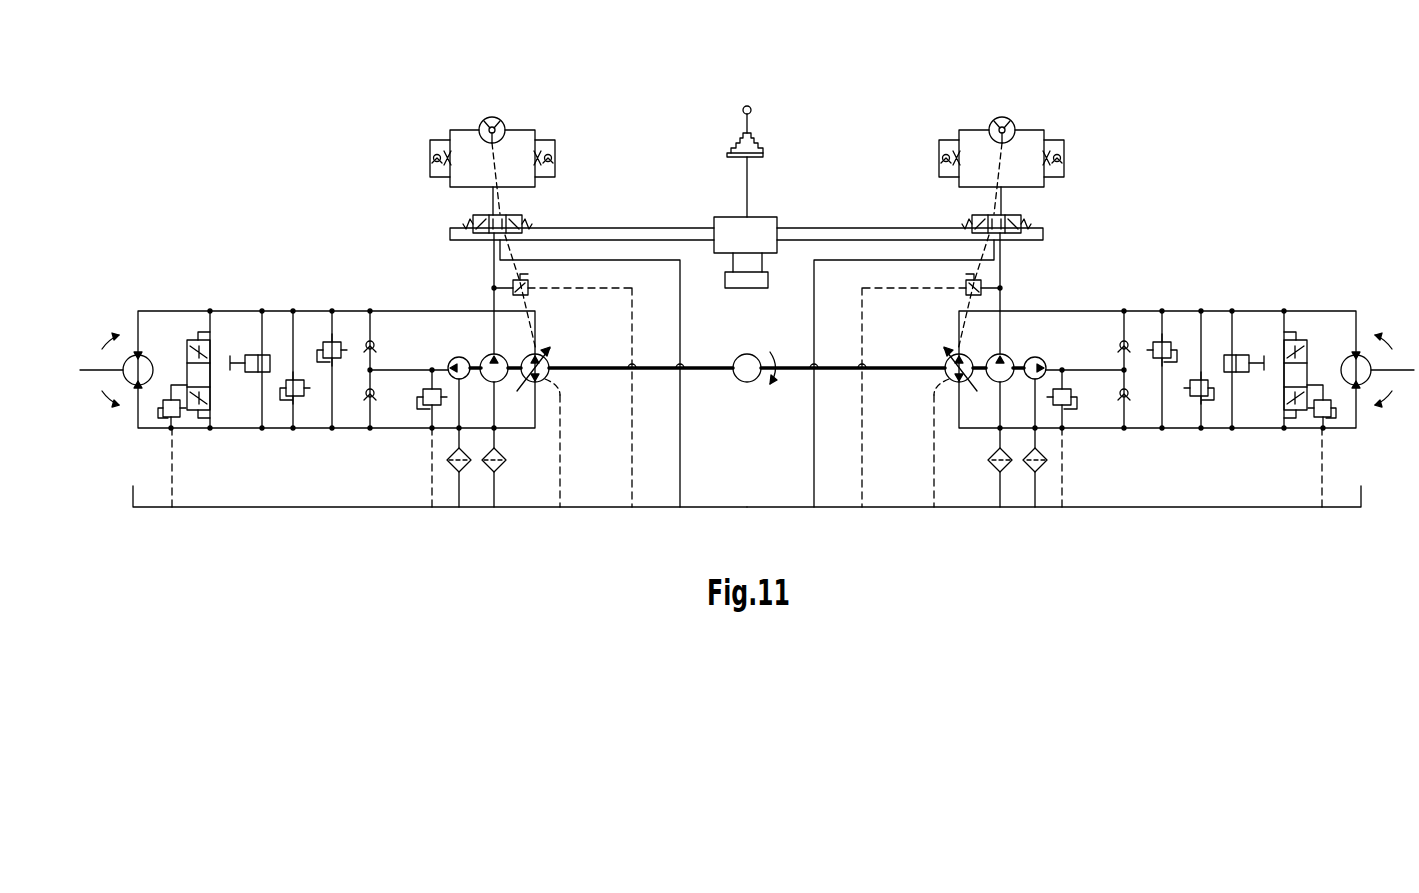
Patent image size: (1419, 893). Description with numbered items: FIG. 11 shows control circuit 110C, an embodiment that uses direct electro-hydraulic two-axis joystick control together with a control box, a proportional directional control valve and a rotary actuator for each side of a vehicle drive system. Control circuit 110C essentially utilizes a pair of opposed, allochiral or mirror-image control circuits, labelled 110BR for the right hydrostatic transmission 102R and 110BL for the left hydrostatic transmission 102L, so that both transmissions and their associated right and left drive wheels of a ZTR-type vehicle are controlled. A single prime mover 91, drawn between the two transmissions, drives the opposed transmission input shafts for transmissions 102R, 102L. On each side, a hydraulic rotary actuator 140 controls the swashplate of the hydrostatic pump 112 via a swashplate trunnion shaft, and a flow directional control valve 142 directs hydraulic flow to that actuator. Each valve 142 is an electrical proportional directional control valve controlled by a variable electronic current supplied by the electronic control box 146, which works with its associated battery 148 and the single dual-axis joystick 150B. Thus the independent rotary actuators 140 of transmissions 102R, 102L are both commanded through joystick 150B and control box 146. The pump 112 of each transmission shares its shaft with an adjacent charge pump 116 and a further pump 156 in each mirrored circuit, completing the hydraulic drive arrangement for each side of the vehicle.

The prime mover 91 is at (742, 382).
The right hydrostatic transmission 102R is at (192, 311).
The left hydrostatic transmission 102L is at (1314, 311).
The right control circuit 110BR is at (321, 231).
The left control circuit 110BL is at (1200, 160).
The control circuit 110C is at (725, 88).
The hydrostatic pump 112 is at (550, 363).
The charge pump 116 is at (460, 357).
The rotary actuator 140 is at (502, 124).
The flow directional control valve 142 is at (524, 215).
The electronic control box 146 is at (766, 227).
The battery 148 is at (743, 290).
The dual-axis joystick 150B is at (752, 108).
The pump 156 is at (489, 354).